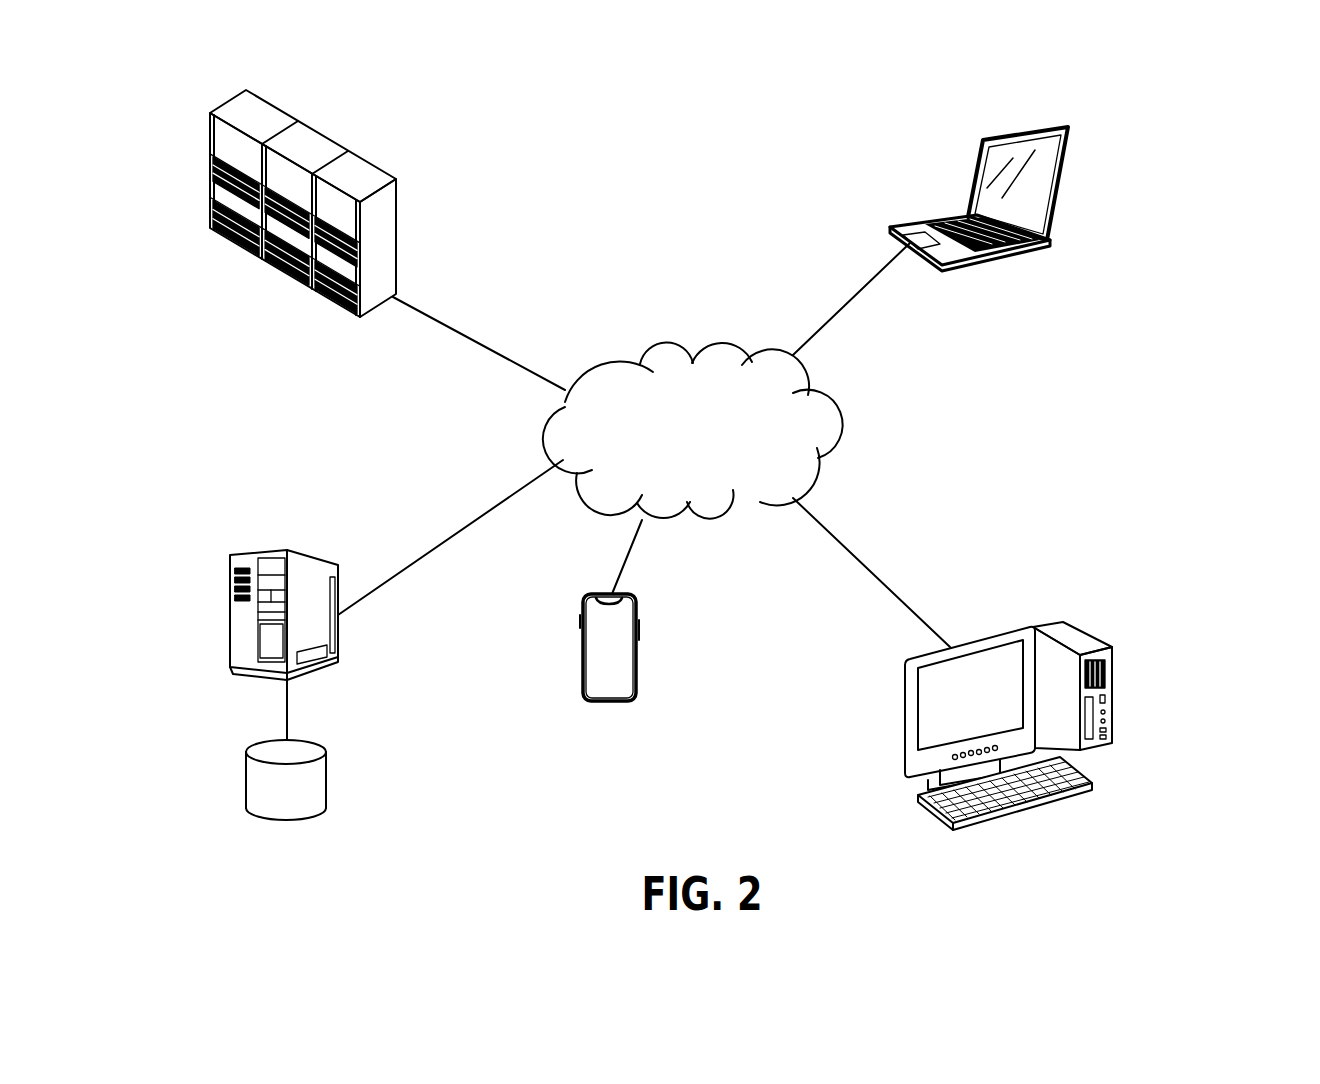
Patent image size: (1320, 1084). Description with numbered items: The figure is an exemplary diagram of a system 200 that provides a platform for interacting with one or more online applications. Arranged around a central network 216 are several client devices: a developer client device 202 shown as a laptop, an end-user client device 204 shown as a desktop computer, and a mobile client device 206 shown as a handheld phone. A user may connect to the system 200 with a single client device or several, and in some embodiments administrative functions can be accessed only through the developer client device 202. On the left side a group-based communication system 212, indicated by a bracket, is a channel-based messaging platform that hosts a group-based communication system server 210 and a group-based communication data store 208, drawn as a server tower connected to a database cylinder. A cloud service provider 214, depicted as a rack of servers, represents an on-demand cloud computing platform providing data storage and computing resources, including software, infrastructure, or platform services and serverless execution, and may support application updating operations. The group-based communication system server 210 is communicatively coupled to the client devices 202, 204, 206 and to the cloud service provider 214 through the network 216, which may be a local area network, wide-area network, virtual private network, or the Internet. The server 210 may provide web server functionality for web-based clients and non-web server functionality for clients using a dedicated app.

The system 200 is at (1162, 120).
The developer client device 202 is at (1062, 197).
The end-user client device 204 is at (1112, 685).
The mobile client device 206 is at (607, 703).
The group-based communication data store 208 is at (326, 777).
The group-based communication system server 210 is at (312, 560).
The group-based communication system 212 is at (284, 706).
The cloud service provider 214 is at (323, 141).
The network 216 is at (820, 388).